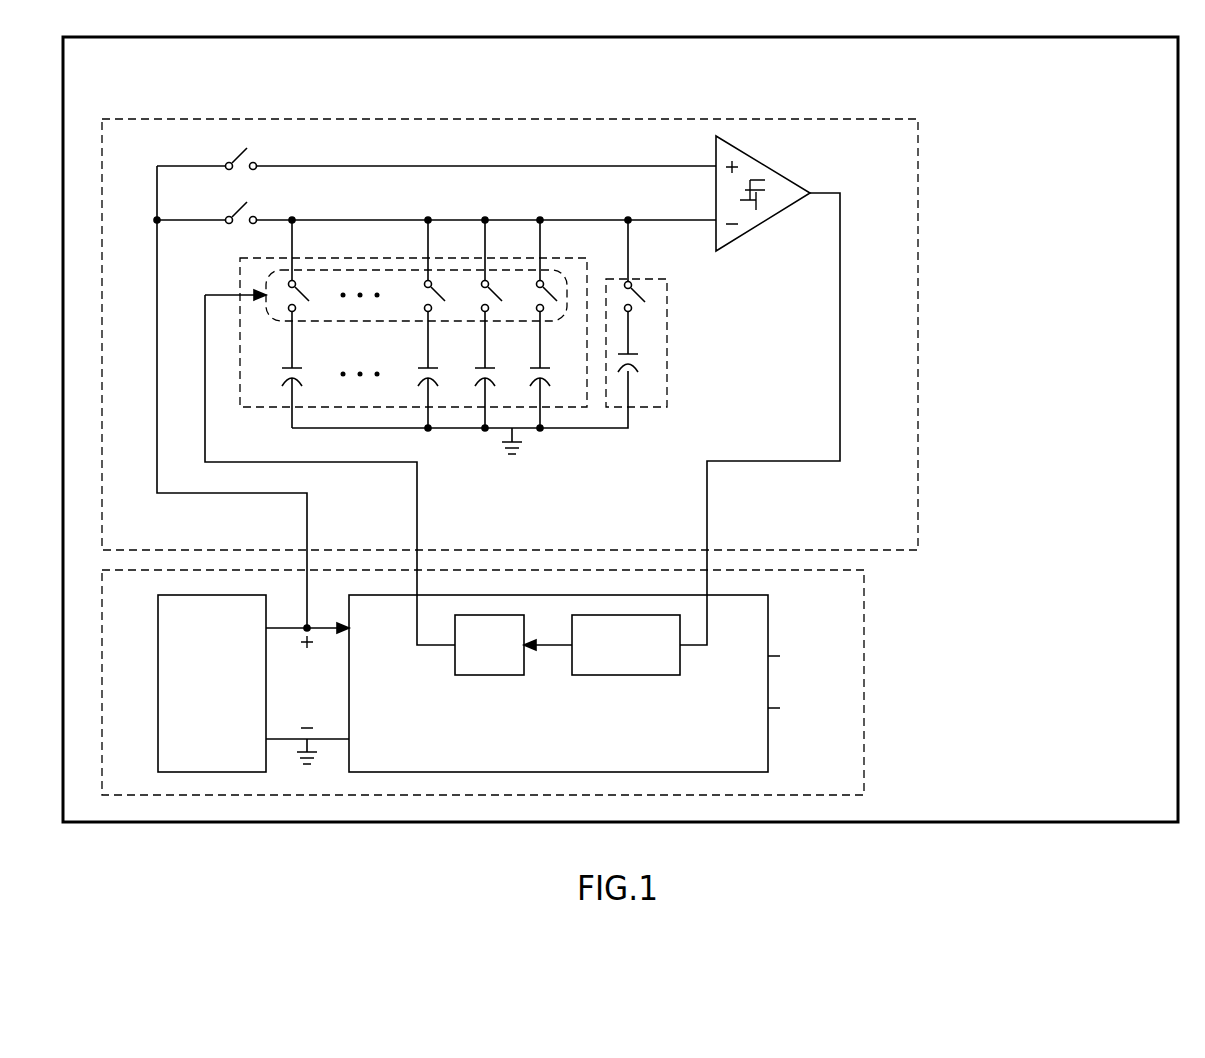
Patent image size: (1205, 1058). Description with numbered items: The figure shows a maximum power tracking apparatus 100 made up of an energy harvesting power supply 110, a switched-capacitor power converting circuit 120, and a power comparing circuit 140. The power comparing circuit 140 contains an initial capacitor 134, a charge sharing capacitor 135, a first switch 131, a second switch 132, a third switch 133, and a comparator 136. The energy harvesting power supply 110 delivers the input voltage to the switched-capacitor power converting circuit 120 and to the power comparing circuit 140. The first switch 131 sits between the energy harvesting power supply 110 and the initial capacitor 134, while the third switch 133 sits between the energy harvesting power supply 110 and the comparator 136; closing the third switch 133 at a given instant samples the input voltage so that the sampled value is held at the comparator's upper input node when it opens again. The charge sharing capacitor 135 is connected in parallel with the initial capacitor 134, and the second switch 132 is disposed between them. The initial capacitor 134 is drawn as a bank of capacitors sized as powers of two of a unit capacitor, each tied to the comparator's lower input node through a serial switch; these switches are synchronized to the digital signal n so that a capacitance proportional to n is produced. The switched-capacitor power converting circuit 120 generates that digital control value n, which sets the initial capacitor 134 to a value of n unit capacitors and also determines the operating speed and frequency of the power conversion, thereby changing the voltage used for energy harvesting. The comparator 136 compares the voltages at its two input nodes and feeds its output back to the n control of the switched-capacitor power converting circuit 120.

The maximum power tracking apparatus 100 is at (620, 37).
The energy harvesting power supply 110 is at (253, 683).
The switched-capacitor power converting circuit 120 is at (905, 680).
The first switch 131 is at (237, 213).
The second switch 132 is at (634, 287).
The third switch 133 is at (233, 159).
The initial capacitor 134 is at (587, 397).
The charge sharing capacitor 135 is at (668, 383).
The comparator 136 is at (762, 165).
The power comparing circuit 140 is at (918, 332).